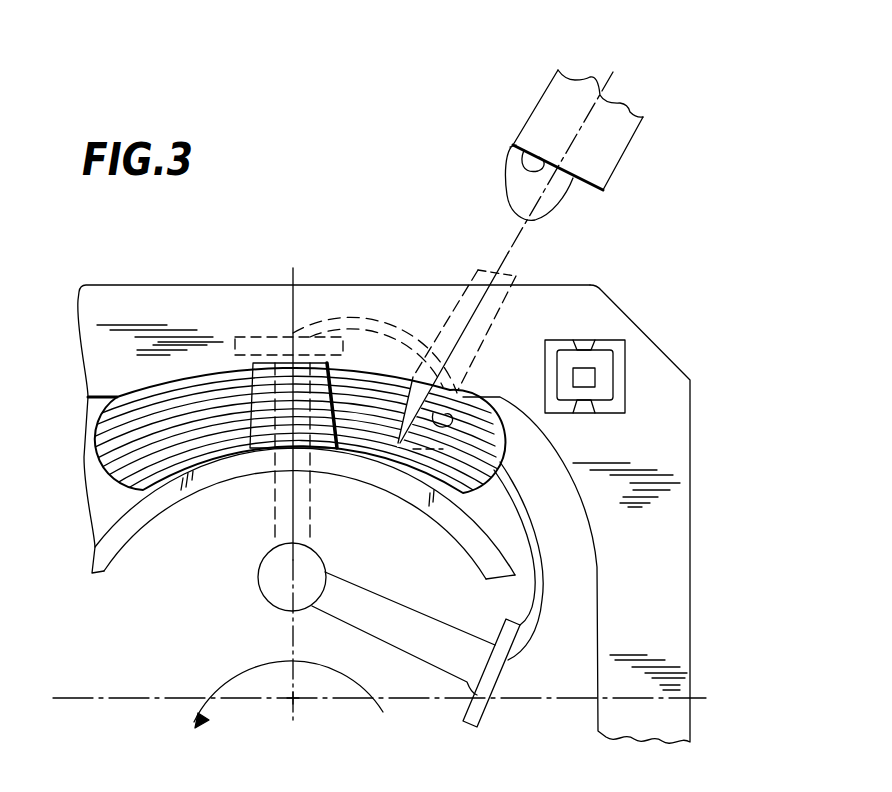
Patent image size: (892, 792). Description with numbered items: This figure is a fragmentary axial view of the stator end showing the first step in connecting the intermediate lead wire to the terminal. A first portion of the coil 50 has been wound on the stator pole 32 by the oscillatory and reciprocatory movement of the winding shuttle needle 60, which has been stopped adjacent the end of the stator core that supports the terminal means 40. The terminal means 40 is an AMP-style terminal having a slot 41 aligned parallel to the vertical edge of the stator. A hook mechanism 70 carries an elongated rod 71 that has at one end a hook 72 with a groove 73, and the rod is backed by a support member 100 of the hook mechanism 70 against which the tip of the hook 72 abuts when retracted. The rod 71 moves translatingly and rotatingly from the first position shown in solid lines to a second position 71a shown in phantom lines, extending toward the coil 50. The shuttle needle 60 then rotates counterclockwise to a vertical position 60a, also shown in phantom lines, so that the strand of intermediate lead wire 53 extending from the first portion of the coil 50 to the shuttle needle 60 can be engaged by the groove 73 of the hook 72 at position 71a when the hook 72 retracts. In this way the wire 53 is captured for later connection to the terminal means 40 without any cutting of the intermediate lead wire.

The support member 100 is at (566, 137).
The hook mechanism 70 is at (625, 158).
The elongated rod 71 is at (507, 177).
The hook 72 is at (510, 147).
The groove 73 is at (557, 210).
The second position of rod 71a is at (468, 353).
The intermediate lead wire 53 is at (362, 320).
The vertical position of shuttle needle 60a is at (252, 333).
The winding shuttle needle 60 is at (489, 698).
The coil 50 is at (97, 425).
The stator pole 32 is at (200, 492).
The terminal means 40 is at (625, 363).
The slot 41 is at (587, 340).